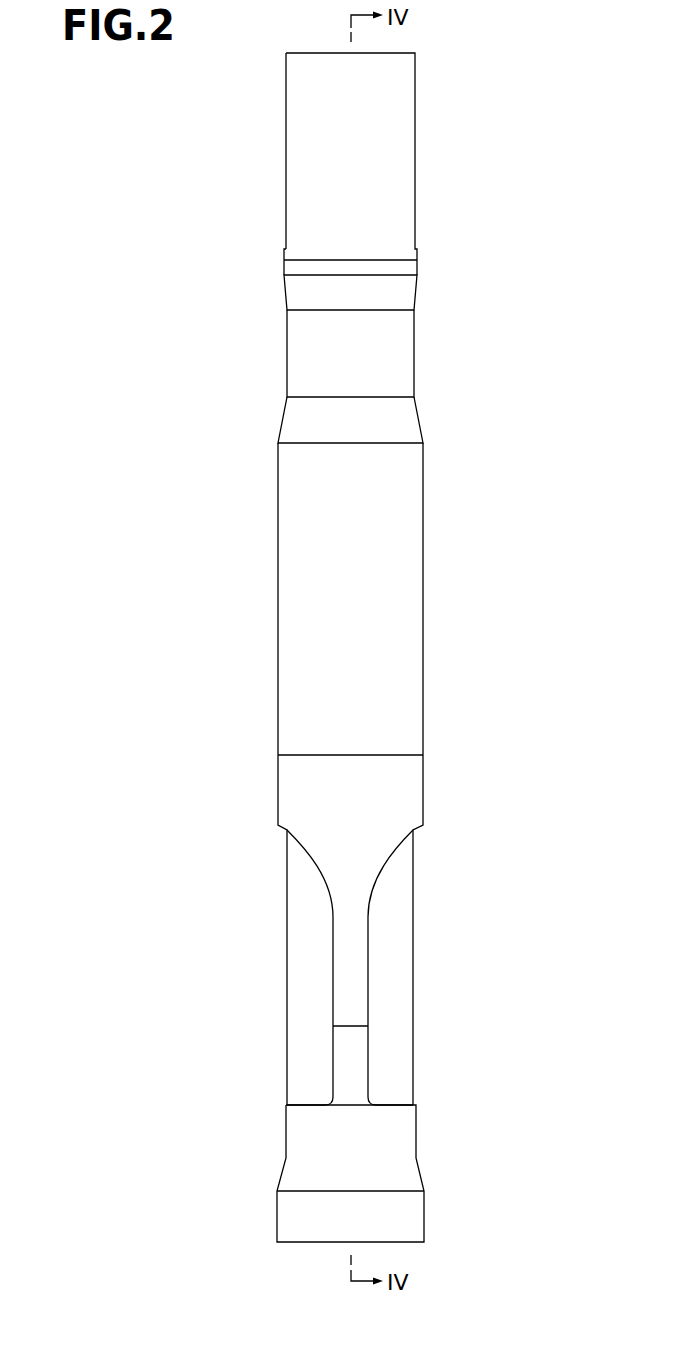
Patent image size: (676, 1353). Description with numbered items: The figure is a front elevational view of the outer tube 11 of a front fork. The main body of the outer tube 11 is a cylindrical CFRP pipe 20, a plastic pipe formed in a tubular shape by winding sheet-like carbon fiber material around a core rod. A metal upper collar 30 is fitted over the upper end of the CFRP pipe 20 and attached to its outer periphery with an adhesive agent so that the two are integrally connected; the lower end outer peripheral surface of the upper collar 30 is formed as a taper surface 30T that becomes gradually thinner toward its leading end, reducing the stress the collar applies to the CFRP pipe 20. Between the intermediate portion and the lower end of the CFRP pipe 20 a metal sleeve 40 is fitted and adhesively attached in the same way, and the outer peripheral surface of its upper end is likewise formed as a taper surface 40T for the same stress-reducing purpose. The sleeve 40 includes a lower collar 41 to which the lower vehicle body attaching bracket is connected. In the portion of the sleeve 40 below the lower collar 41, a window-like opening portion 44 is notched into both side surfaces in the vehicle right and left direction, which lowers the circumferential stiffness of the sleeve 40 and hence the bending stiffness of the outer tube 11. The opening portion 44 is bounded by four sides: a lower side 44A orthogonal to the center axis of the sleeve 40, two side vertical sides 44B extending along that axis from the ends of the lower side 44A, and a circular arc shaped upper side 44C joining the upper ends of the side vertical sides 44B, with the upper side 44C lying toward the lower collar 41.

The outer tube 11 is at (173, 190).
The upper collar 30 is at (280, 125).
The taper surface 30T is at (297, 292).
The CFRP pipe 20 is at (282, 350).
The taper surface 40T is at (297, 420).
The sleeve 40 is at (270, 530).
The lower collar 41 is at (290, 617).
The opening portion 44 is at (370, 903).
The lower side 44A is at (394, 1105).
The side vertical sides 44B is at (368, 1030).
The upper side 44C is at (398, 853).